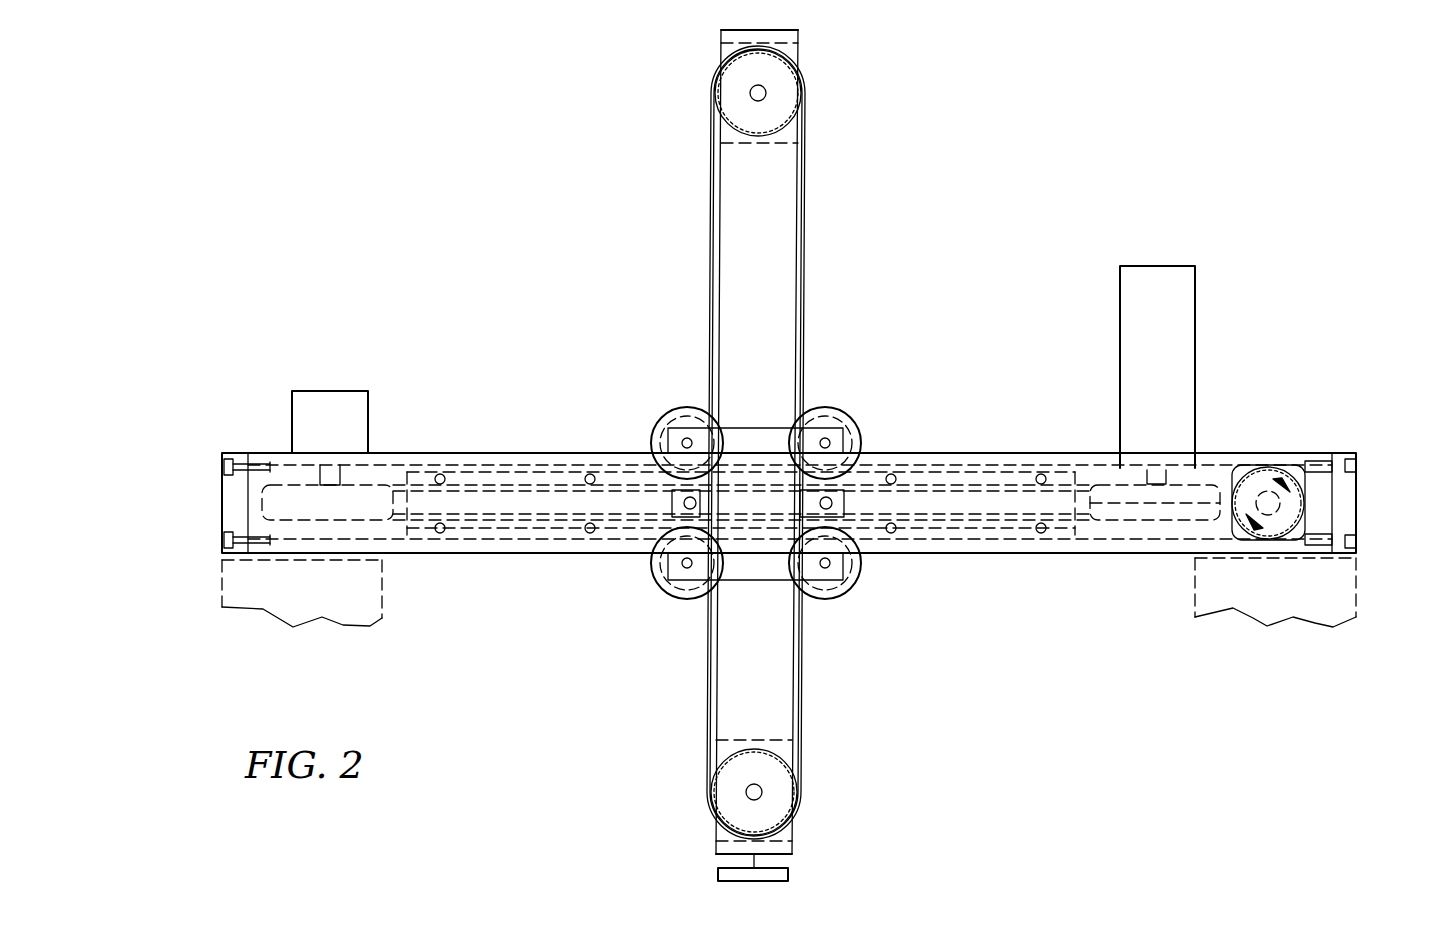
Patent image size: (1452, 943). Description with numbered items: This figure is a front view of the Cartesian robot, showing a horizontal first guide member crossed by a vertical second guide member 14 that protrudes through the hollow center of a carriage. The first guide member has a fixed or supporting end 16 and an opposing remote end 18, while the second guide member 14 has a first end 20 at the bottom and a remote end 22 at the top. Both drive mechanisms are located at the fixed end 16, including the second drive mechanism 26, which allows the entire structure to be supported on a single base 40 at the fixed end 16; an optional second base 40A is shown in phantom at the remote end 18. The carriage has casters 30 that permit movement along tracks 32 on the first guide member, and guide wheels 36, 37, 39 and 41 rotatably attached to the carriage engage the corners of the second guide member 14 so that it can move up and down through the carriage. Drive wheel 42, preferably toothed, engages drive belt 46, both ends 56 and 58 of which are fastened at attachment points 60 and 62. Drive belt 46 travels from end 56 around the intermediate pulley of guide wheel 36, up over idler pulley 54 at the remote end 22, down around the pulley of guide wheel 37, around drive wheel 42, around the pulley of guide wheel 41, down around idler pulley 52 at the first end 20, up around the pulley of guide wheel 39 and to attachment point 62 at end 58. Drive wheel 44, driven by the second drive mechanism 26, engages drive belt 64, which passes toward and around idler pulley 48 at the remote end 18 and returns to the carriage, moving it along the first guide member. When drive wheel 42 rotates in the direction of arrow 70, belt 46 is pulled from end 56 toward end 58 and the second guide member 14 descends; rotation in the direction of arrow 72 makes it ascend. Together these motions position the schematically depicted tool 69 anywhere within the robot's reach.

The second guide member 14 is at (882, 263).
The fixed end 16 is at (1348, 517).
The remote end 18 is at (232, 499).
The first end 20 is at (782, 847).
The remote end 22 is at (722, 33).
The second drive mechanism 26 is at (1130, 292).
The casters 30 is at (842, 502).
The tracks 32 is at (625, 505).
The guide wheel 36 is at (690, 408).
The guide wheel 37 is at (835, 410).
The guide wheel 39 is at (672, 598).
The base 40 is at (1208, 602).
The second base 40A is at (365, 615).
The guide wheel 41 is at (842, 594).
The drive wheel 42 is at (1293, 503).
The drive wheel 44 is at (1155, 508).
The drive belt 46 is at (803, 183).
The idler pulley 48 is at (368, 498).
The idler pulley 52 is at (778, 795).
The idler pulley 54 is at (782, 91).
The belt end 56 is at (267, 462).
The belt end 58 is at (243, 555).
The attachment point 60 is at (242, 463).
The attachment point 62 is at (225, 556).
The drive belt 64 is at (1084, 499).
The tool 69 is at (788, 874).
The arrow 70 is at (1268, 478).
The arrow 72 is at (1273, 525).